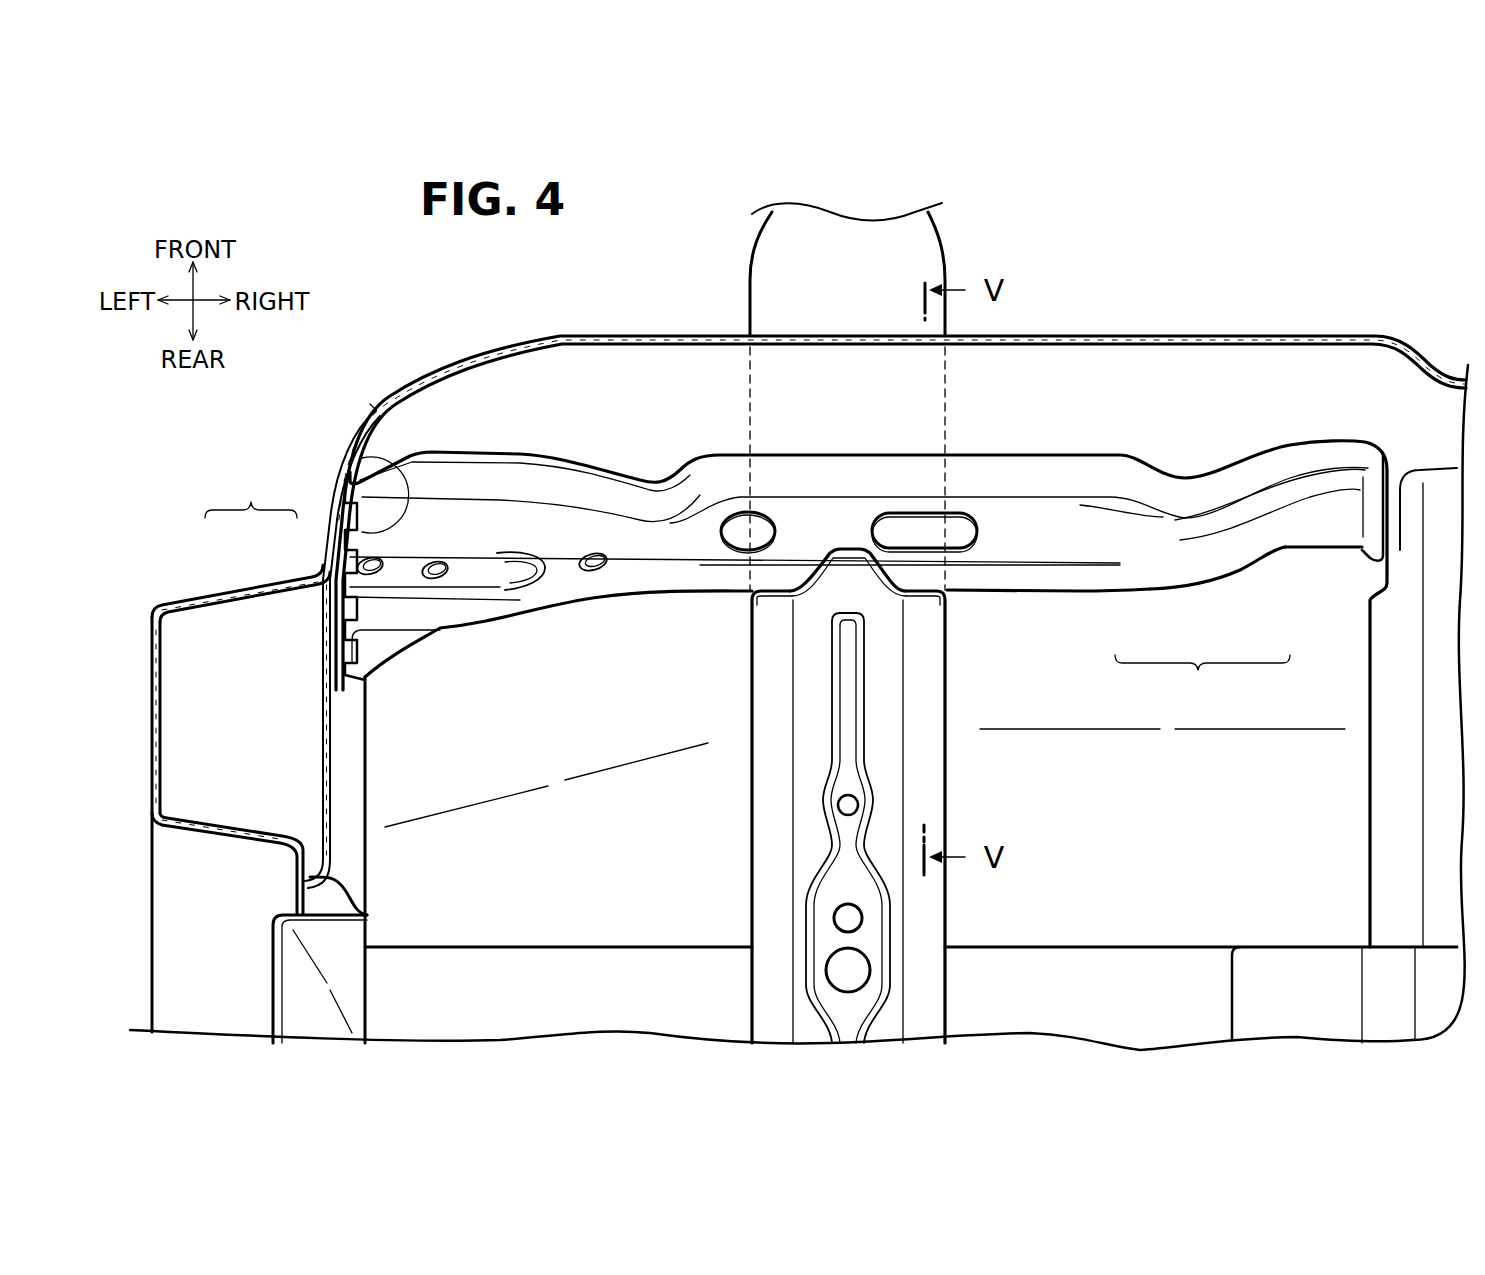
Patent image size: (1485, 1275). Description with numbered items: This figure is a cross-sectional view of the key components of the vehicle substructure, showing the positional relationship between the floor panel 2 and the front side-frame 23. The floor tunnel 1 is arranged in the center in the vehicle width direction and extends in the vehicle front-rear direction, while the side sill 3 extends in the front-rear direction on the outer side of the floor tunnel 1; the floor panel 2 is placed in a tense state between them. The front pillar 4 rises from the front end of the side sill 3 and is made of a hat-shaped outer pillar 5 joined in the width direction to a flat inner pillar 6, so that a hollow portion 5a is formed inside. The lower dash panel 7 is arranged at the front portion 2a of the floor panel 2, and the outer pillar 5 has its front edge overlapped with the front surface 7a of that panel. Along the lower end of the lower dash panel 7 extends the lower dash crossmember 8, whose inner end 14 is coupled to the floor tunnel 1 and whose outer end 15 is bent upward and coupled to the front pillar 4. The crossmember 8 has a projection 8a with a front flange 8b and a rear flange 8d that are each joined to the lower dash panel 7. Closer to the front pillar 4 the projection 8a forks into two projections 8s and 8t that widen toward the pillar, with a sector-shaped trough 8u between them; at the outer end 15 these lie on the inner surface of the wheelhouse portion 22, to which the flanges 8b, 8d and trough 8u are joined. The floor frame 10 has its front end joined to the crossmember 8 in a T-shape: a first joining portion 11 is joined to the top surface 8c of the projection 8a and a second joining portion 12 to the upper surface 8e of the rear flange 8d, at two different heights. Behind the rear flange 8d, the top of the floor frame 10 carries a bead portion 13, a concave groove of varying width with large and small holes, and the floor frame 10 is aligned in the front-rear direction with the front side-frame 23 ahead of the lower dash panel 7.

The floor tunnel 1 is at (1440, 497).
The floor panel 2 is at (517, 993).
The front portion 2a is at (598, 965).
The side sill 3 is at (183, 940).
The front pillar 4 is at (251, 495).
The outer pillar 5 is at (233, 583).
The hollow portion 5a is at (160, 655).
The inner pillar 6 is at (323, 710).
The lower dash panel 7 is at (1183, 334).
The front surface 7a is at (392, 400).
The lower dash crossmember 8 is at (868, 694).
The projection 8a is at (1247, 533).
The front flange 8b is at (1180, 490).
The top surface 8c is at (843, 528).
The rear flange 8d is at (1123, 577).
The upper surface 8e is at (917, 573).
The projection 8s is at (497, 535).
The projection 8t is at (392, 617).
The trough 8u is at (408, 572).
The floor frame 10 is at (958, 804).
The first joining portion 11 is at (920, 607).
The second joining portion 12 is at (775, 605).
The bead portion 13 is at (847, 745).
The inner end 14 is at (1360, 515).
The outer end 15 is at (362, 470).
The wheelhouse portion 22 is at (349, 418).
The front side-frame 23 is at (792, 258).